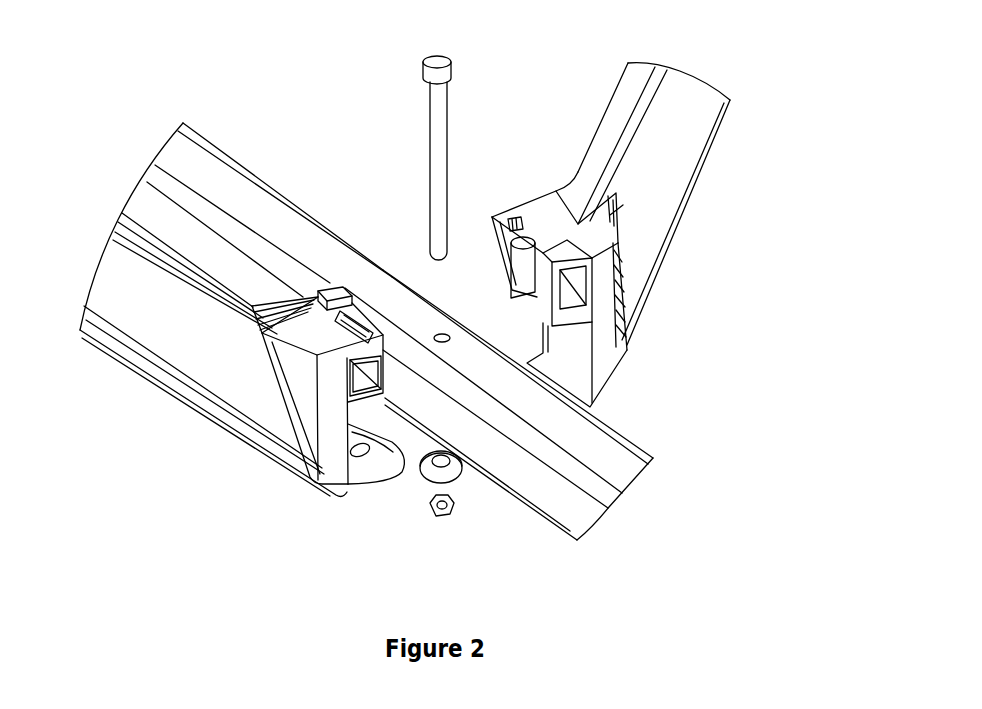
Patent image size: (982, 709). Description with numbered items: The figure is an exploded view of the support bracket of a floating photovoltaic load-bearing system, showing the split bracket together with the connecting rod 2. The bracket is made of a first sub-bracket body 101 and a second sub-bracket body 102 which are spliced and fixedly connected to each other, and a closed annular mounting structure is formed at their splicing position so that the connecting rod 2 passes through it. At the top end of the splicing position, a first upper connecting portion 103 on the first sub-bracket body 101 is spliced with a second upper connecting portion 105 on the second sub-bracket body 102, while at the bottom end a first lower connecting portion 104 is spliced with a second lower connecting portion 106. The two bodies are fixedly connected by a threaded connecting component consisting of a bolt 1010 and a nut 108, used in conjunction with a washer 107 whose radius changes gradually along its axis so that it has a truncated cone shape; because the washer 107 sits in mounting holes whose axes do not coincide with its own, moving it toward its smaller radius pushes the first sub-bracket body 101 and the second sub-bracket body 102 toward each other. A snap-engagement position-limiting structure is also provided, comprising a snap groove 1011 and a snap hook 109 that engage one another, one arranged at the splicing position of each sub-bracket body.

The connecting rod 2 is at (600, 465).
The first sub-bracket body 101 is at (228, 365).
The second sub-bracket body 102 is at (650, 193).
The first upper connecting portion 103 is at (310, 450).
The first lower connecting portion 104 is at (387, 452).
The second upper connecting portion 105 is at (590, 250).
The second lower connecting portion 106 is at (583, 393).
The washer 107 is at (443, 475).
The nut 108 is at (430, 518).
The snap hook 109 is at (338, 290).
The bolt 1010 is at (435, 203).
The snap groove 1011 is at (515, 217).